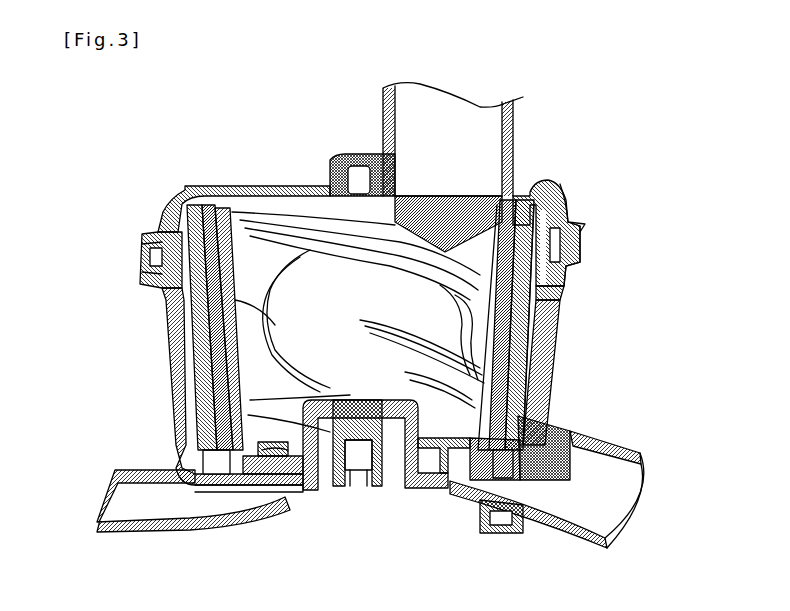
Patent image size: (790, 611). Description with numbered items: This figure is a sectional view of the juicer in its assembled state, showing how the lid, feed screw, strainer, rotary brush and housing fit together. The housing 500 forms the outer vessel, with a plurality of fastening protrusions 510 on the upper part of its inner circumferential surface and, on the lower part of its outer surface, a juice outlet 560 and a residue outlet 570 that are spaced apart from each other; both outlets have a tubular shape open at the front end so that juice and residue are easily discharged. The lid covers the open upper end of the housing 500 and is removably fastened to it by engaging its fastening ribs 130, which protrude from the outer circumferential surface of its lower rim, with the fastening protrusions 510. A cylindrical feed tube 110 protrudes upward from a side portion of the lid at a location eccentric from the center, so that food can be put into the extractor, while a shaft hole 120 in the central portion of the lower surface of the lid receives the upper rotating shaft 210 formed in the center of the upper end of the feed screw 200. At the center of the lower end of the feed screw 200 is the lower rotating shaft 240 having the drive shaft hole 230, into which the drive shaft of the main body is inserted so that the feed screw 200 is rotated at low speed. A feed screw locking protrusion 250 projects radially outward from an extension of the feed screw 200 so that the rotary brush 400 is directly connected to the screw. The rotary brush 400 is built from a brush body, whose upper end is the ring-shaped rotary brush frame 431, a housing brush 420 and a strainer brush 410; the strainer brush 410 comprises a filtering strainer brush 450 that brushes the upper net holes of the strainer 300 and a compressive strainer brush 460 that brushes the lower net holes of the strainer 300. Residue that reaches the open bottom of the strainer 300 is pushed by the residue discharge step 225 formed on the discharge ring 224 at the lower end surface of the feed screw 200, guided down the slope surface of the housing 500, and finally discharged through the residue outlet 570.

The feed tube 110 is at (383, 90).
The shaft hole 120 is at (205, 186).
The fastening ribs 130 is at (566, 258).
The feed screw 200 is at (185, 308).
The upper rotating shaft 210 is at (330, 160).
The discharge ring 224 is at (293, 470).
The residue discharge step 225 is at (255, 485).
The drive shaft hole 230 is at (360, 478).
The lower rotating shaft 240 is at (390, 440).
The feed screw locking protrusion 250 is at (540, 188).
The strainer 300 is at (150, 224).
The rotary brush 400 is at (170, 402).
The strainer brush 410 is at (570, 339).
The housing brush 420 is at (560, 312).
The rotary brush frame 431 is at (568, 226).
The filtering strainer brush 450 is at (550, 342).
The compressive strainer brush 460 is at (546, 400).
The housing 500 is at (168, 355).
The fastening protrusions 510 is at (578, 240).
The juice outlet 560 is at (620, 443).
The residue outlet 570 is at (117, 472).